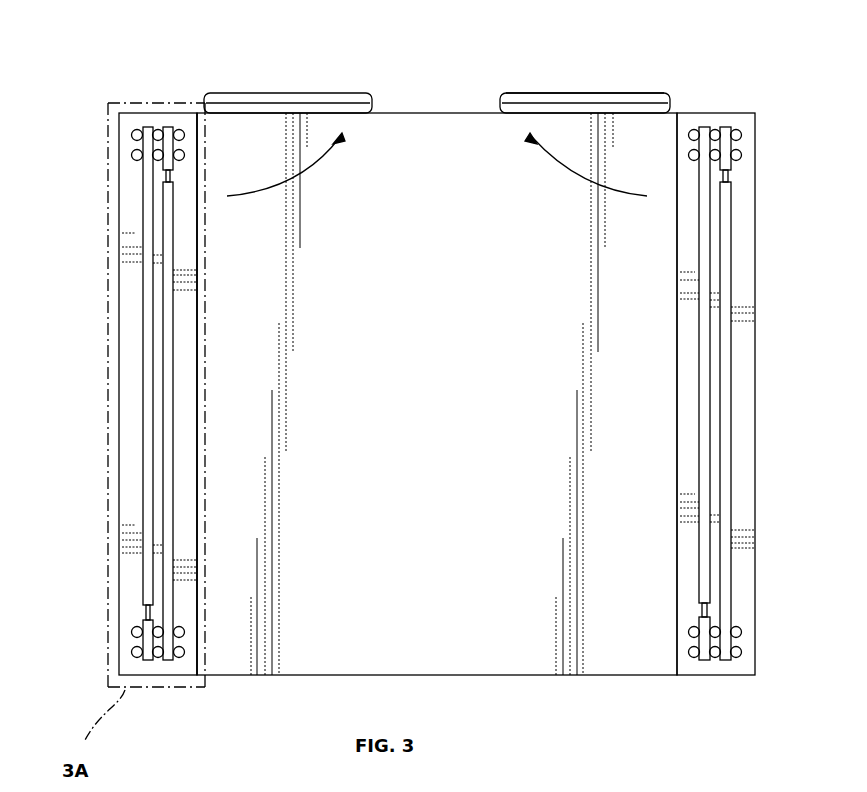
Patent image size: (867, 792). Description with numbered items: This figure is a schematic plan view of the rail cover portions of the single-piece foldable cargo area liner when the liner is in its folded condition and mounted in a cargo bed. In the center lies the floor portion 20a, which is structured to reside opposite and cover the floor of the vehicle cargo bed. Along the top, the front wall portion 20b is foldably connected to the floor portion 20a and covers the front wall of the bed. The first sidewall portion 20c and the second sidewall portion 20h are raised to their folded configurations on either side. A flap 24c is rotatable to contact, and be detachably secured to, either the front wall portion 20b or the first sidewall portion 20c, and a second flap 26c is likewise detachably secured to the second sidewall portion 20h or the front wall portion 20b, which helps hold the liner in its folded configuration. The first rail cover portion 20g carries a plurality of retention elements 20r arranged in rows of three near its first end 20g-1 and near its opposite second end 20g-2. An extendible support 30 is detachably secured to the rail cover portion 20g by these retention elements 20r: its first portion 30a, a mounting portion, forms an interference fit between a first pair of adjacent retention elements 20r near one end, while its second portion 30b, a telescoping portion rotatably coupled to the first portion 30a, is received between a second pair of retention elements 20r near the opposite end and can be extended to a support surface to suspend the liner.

The floor portion 20a is at (466, 492).
The front wall portion 20b is at (577, 93).
The first sidewall portion 20c is at (197, 440).
The first rail cover portion 20g is at (130, 332).
The first end of the first rail cover portion 20g-1 is at (163, 687).
The second end of the first rail cover portion 20g-2 is at (160, 108).
The second sidewall portion 20h is at (677, 460).
The retention elements 20r is at (182, 131).
The flap 24c is at (356, 97).
The second flap 26c is at (511, 100).
The extendible support 30 is at (168, 240).
The first portion 30a is at (157, 156).
The second portion 30b is at (145, 505).